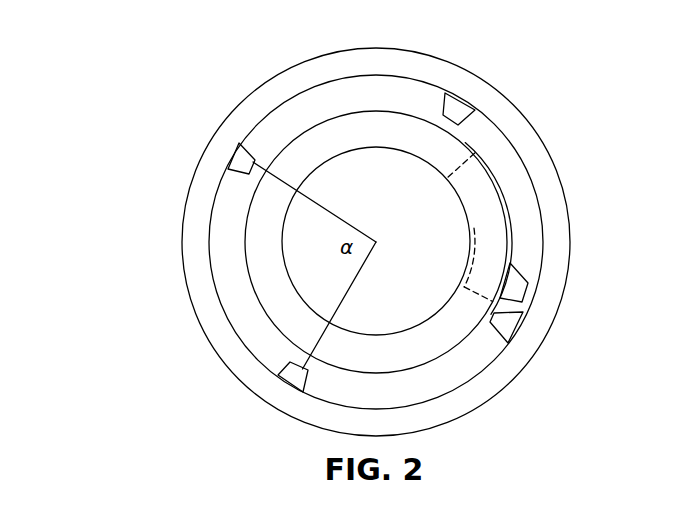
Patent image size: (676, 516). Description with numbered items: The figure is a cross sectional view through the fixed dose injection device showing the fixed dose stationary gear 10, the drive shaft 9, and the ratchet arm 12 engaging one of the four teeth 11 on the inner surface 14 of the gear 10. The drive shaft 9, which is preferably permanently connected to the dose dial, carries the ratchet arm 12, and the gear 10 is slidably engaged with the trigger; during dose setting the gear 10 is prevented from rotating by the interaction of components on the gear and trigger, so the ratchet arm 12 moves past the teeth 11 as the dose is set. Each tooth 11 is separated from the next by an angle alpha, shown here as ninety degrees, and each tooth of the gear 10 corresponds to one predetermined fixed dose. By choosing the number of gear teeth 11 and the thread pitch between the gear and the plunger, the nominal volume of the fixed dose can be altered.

The gear 10 is at (158, 73).
The drive shaft 9 is at (474, 155).
The teeth 11 is at (240, 158).
The ratchet arm 12 is at (522, 262).
The inner surface 14 is at (210, 227).